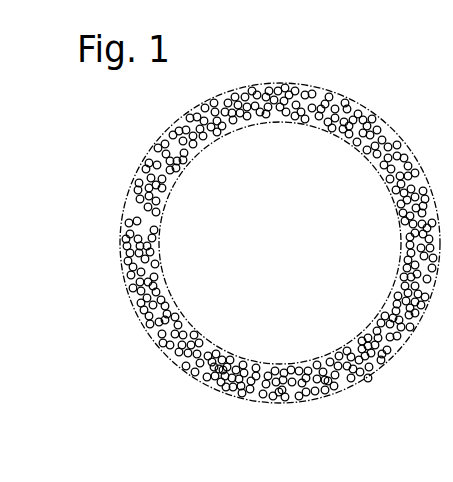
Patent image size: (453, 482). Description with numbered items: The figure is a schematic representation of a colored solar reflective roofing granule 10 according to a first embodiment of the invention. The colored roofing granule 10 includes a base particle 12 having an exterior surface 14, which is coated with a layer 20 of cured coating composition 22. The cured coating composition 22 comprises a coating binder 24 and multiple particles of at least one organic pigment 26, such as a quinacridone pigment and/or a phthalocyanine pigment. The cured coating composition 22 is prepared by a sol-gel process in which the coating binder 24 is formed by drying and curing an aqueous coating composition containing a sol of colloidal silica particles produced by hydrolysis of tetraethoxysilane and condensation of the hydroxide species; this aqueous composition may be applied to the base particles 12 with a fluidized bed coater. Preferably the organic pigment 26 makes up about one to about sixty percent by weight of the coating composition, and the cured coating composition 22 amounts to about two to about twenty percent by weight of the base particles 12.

The colored solar reflective roofing granule 10 is at (229, 274).
The base particle 12 is at (287, 243).
The exterior surface 14 is at (160, 225).
The layer 20 is at (170, 333).
The cured coating composition 22 is at (178, 357).
The coating binder 24 is at (223, 372).
The organic pigment 26 is at (275, 402).